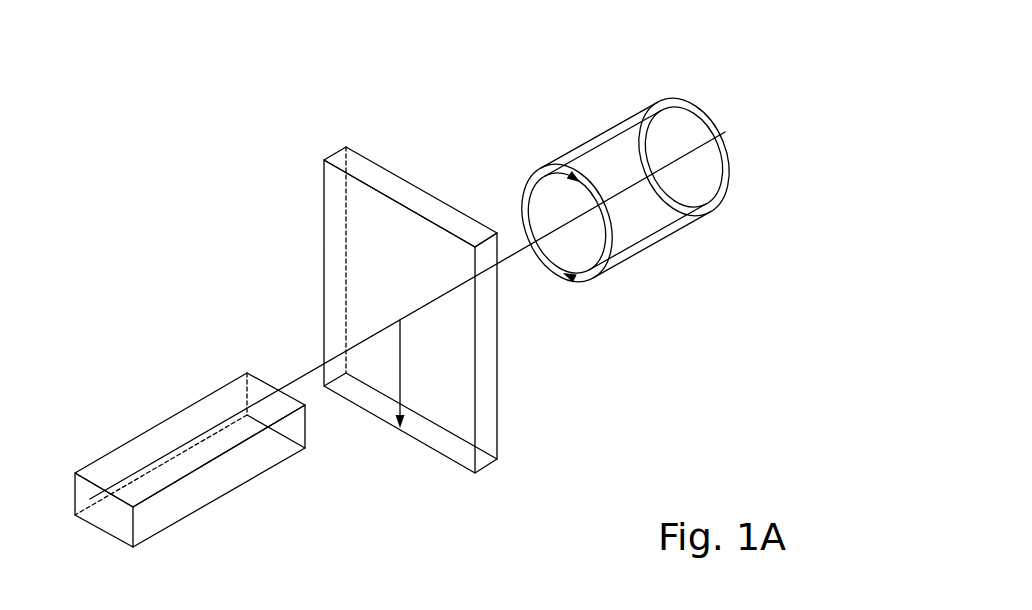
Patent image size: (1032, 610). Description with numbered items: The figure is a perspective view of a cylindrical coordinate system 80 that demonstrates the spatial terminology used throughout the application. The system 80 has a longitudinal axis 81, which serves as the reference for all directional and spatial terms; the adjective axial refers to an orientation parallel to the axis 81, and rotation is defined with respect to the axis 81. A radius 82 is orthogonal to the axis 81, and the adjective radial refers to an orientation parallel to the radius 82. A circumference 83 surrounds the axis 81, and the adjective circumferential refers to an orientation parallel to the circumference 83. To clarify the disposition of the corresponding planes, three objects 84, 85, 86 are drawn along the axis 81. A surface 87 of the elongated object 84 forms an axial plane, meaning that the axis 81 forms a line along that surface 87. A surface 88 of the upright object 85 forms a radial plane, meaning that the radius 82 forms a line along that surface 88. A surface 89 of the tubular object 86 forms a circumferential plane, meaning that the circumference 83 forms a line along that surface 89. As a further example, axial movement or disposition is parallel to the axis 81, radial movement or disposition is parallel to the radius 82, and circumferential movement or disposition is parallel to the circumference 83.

The cylindrical coordinate system 80 is at (278, 195).
The longitudinal axis 81 is at (714, 128).
The radius 82 is at (400, 368).
The circumference 83 is at (522, 185).
The object 84 is at (158, 535).
The object 85 is at (513, 470).
The object 86 is at (660, 263).
The surface 87 is at (153, 443).
The surface 88 is at (338, 270).
The surface 89 is at (594, 130).